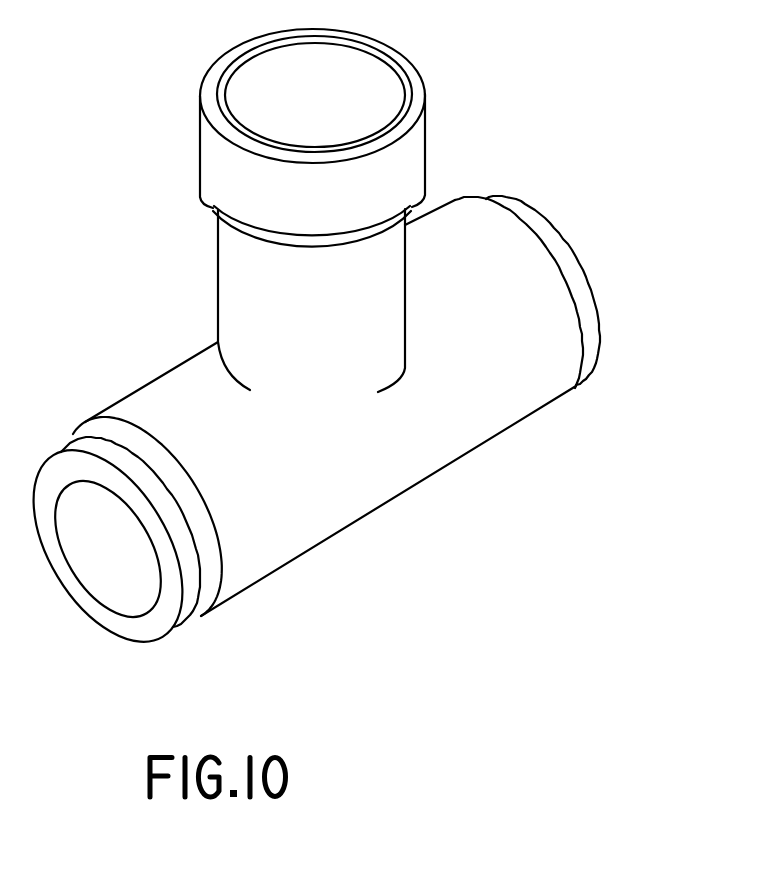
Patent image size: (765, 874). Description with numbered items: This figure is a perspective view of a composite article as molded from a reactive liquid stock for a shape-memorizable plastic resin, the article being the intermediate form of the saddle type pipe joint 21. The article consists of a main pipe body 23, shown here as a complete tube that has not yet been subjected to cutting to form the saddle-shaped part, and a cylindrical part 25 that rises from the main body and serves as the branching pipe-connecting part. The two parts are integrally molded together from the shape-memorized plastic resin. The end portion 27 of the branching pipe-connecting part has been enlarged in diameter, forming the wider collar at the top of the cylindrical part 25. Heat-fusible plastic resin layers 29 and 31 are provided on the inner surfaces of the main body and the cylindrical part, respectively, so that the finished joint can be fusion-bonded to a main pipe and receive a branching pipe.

The pipe joint 21 is at (145, 250).
The main pipe body 23 is at (404, 489).
The cylindrical part 25 is at (226, 248).
The end portion 27 is at (411, 147).
The heat-fusible plastic resin layer 29 is at (187, 597).
The heat-fusible plastic resin layer 31 is at (227, 98).